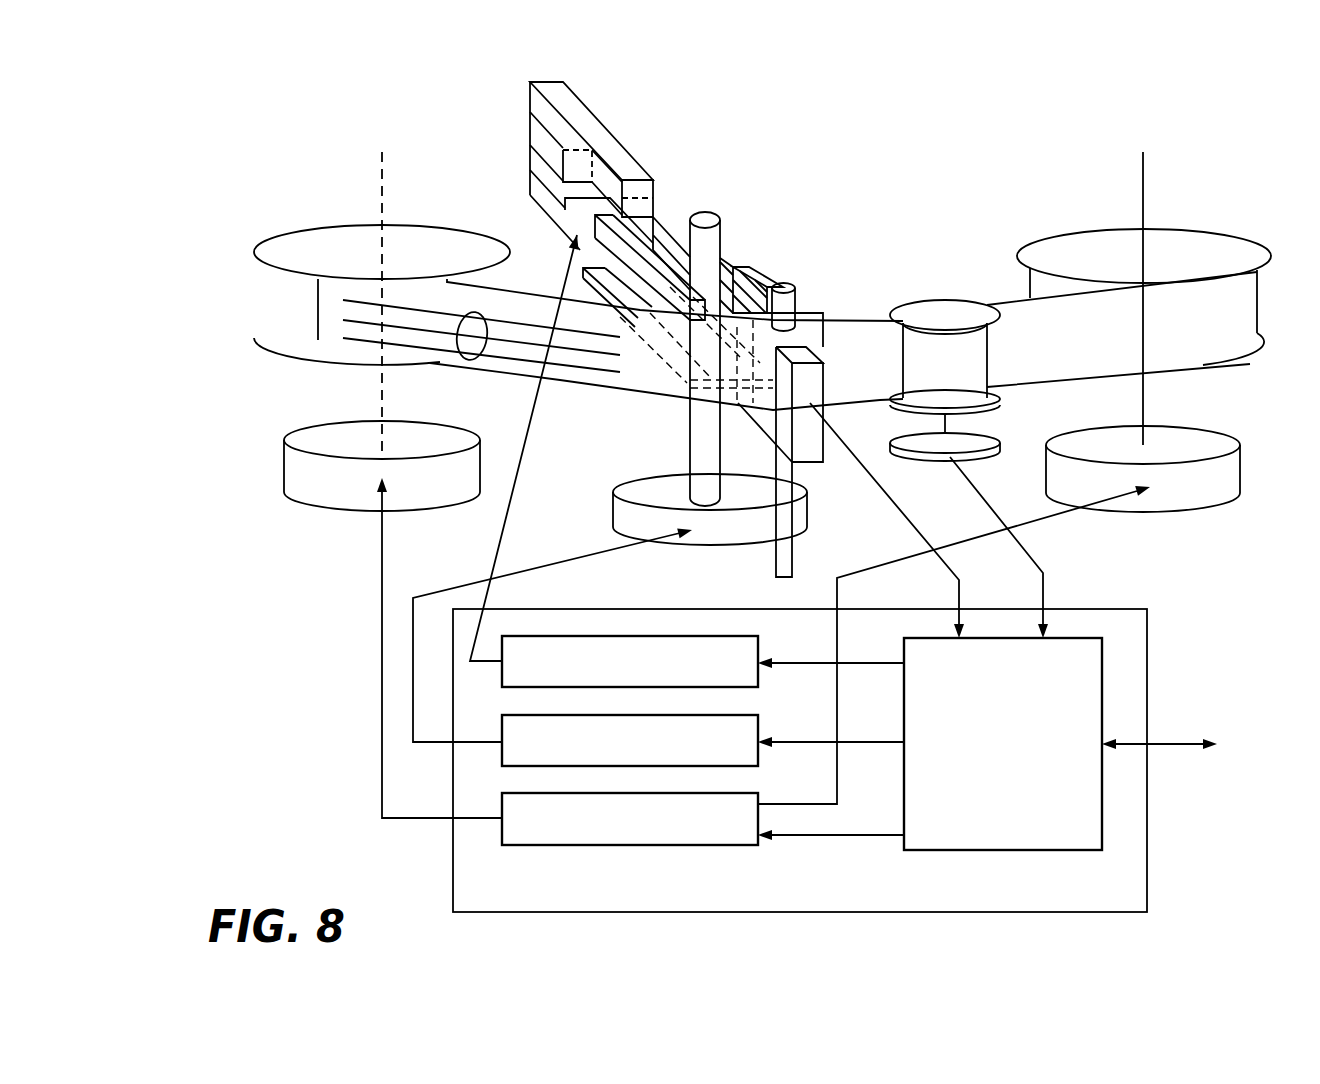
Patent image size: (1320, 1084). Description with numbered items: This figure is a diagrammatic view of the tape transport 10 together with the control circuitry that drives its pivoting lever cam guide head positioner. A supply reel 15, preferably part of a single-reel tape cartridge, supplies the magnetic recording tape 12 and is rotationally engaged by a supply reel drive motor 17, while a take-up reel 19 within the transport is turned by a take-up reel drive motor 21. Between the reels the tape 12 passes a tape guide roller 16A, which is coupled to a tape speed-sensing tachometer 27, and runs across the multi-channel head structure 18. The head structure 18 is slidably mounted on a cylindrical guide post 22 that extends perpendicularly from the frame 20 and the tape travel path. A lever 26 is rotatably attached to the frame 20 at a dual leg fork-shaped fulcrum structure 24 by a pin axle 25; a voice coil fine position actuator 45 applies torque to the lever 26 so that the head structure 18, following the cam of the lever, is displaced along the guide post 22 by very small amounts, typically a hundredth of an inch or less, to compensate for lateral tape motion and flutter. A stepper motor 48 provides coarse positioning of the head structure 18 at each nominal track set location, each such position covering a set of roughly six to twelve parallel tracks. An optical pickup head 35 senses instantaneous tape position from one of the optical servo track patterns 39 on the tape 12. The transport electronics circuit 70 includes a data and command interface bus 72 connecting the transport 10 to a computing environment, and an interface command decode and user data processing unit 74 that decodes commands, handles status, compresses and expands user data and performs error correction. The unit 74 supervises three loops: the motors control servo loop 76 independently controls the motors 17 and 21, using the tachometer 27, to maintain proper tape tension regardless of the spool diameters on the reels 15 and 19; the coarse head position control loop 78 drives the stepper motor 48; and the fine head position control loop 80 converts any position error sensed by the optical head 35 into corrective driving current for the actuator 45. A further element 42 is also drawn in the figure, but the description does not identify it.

The tape transport 10 is at (292, 666).
The magnetic recording tape 12 is at (1058, 348).
The supply reel 15 is at (1205, 268).
The tape guide roller 16A is at (948, 313).
The supply reel drive motor 17 is at (1204, 484).
The head structure 18 is at (810, 324).
The take-up reel 19 is at (338, 247).
The frame 20 is at (572, 255).
The take-up reel drive motor 21 is at (341, 500).
The cylindrical guide post 22 is at (795, 487).
The dual leg fork-shaped fulcrum structure 24 is at (768, 275).
The pin axle 25 is at (583, 273).
The lever 26 is at (675, 228).
The tachometer 27 is at (944, 455).
The optical pickup head 35 is at (812, 398).
The optical servo track patterns 39 is at (485, 362).
The actuator shaft 42 is at (708, 215).
The fine position actuator 45 is at (634, 108).
The stepper motor 48 is at (614, 493).
The transport electronics circuit 70 is at (688, 608).
The data and command interface bus 72 is at (1170, 743).
The interface command decode and user data processing unit 74 is at (975, 851).
The motors control servo loop 76 is at (762, 842).
The coarse head position control loop 78 is at (762, 752).
The fine head position control loop 80 is at (762, 672).